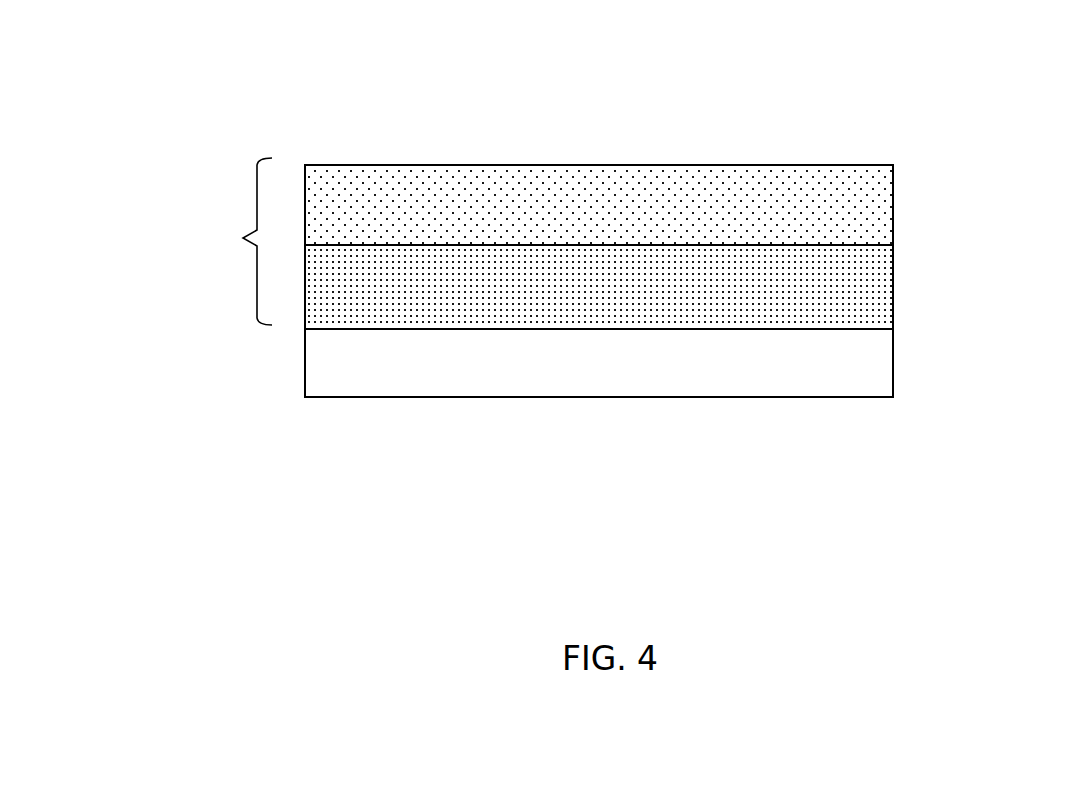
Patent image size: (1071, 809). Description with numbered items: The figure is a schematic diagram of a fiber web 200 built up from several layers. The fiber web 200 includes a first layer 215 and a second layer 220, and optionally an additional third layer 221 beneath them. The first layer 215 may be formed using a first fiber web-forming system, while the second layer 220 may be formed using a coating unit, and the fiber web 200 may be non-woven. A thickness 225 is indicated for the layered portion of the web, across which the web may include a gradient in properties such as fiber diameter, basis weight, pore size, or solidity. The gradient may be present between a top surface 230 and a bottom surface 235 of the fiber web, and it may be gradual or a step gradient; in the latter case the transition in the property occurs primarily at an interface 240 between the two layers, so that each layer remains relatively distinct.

The fiber web 200 is at (153, 167).
The first layer 215 is at (825, 220).
The second layer 220 is at (825, 305).
The third layer 221 is at (829, 377).
The thickness 225 is at (224, 241).
The top surface 230 is at (622, 163).
The bottom surface 235 is at (521, 329).
The interface 240 is at (419, 245).